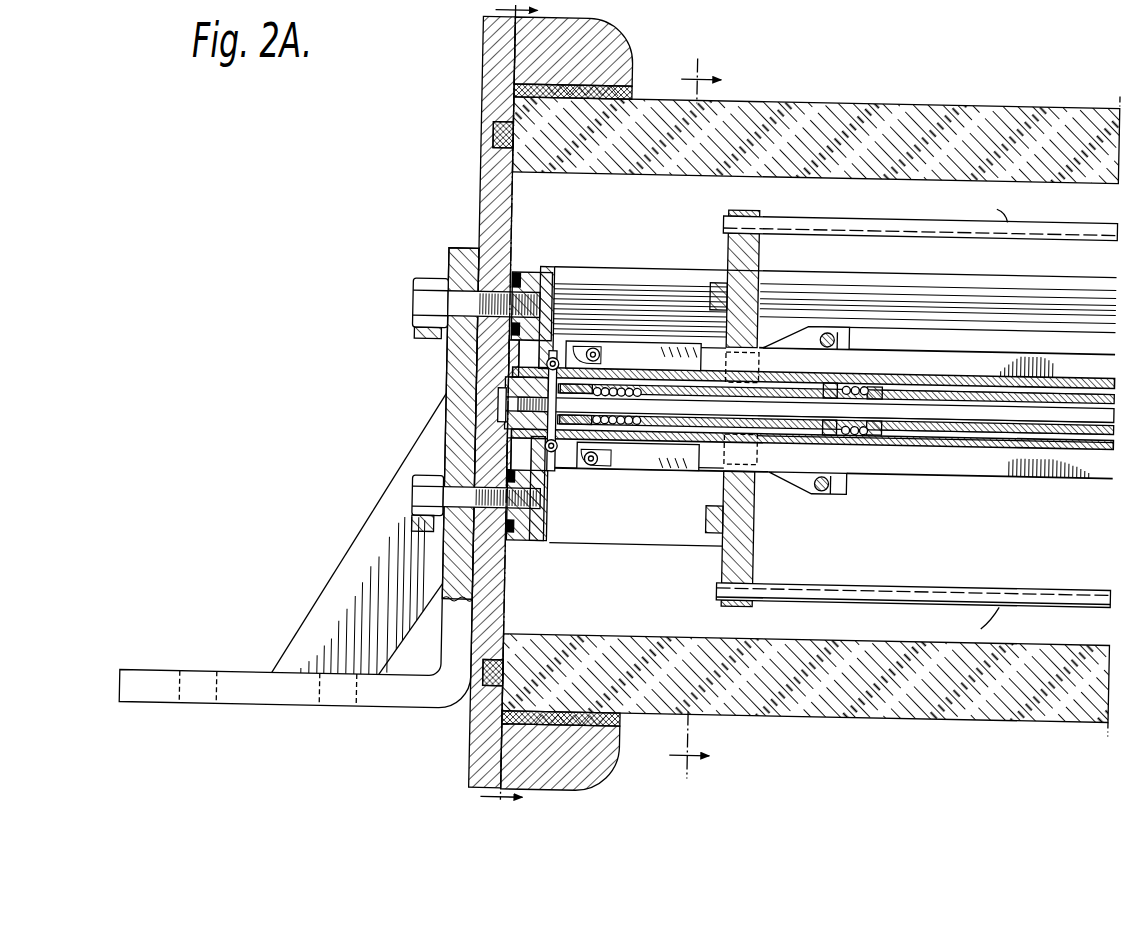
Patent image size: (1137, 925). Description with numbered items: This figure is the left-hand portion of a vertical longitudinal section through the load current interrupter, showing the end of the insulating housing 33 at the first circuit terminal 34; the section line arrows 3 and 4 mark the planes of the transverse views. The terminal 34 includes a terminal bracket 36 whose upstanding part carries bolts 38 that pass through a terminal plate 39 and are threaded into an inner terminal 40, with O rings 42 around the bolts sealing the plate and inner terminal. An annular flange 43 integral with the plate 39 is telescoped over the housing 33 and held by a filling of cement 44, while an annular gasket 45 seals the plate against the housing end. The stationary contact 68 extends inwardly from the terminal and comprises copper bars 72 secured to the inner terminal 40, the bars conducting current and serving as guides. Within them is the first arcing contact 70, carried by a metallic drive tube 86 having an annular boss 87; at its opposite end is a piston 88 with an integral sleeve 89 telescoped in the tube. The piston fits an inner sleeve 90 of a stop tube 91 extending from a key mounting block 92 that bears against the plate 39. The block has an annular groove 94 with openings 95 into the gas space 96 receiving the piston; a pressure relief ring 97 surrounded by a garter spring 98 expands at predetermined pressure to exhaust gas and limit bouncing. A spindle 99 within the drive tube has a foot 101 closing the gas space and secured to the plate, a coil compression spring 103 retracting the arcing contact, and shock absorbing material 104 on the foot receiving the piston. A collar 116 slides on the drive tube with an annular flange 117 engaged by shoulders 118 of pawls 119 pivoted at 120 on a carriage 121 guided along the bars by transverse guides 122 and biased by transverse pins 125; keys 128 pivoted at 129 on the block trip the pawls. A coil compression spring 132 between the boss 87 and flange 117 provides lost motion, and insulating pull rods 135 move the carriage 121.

The section line 3- 3 is at (494, 403).
The section line 4- 4 is at (695, 415).
The insulating housing 33 is at (900, 97).
The first circuit terminal 34 is at (383, 162).
The terminal bracket 36 is at (448, 256).
The bolts 38 is at (430, 301).
The terminal plate 39 is at (480, 172).
The inner terminal 40 is at (536, 288).
The O rings 42 is at (515, 273).
The annular flange 43 is at (600, 58).
The cement 44 is at (600, 88).
The annular gasket 45 is at (488, 134).
The stationary contact 68 is at (655, 227).
The first arcing contact 70 is at (1020, 360).
The bars 72 is at (664, 268).
The metallic drive tube 86 is at (1042, 446).
The annular boss 87 is at (880, 440).
The piston 88 is at (582, 478).
The sleeve 89 is at (590, 458).
The inner sleeve 90 is at (540, 378).
The stop tube 91 is at (684, 442).
The key mounting block 92 is at (510, 345).
The annular groove 94 is at (556, 345).
The openings 95 is at (540, 395).
The gas space 96 is at (556, 452).
The pressure relief ring 97 is at (535, 358).
The garter spring 98 is at (554, 470).
The spindle 99 is at (993, 412).
The foot 101 is at (498, 408).
The coil compression spring 103 is at (642, 452).
The shock absorbing material 104 is at (498, 405).
The collar 116 is at (812, 437).
The annular flange 117 is at (856, 452).
The shoulders 118 is at (835, 372).
The pawls 119 is at (836, 328).
The pivot 120 is at (807, 323).
The carriage 121 is at (762, 283).
The transverse guides 122 is at (716, 280).
The transverse pins 125 is at (826, 327).
The keys 128 is at (1075, 355).
The pivot 129 is at (600, 353).
The coil compression spring 132 is at (862, 376).
The pull rods 135 is at (1052, 222).